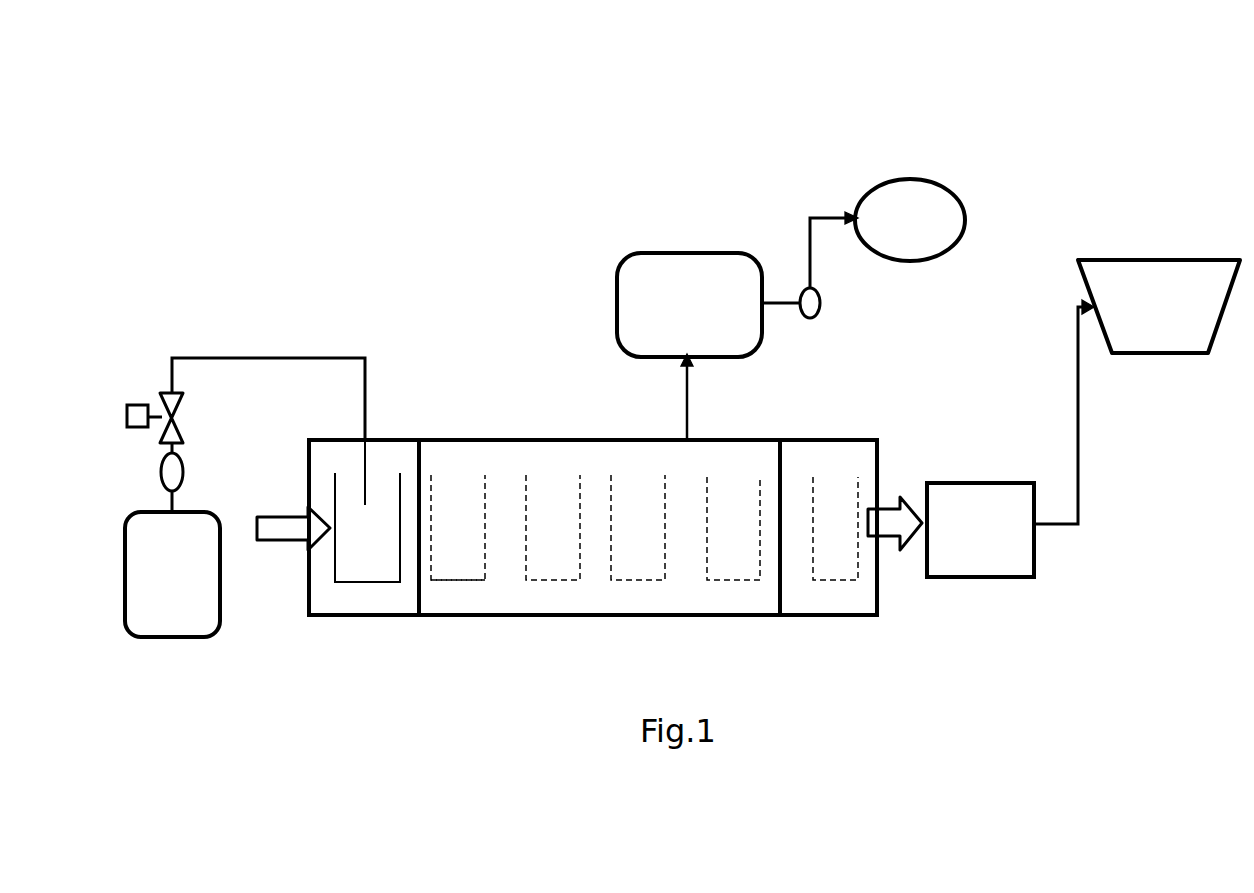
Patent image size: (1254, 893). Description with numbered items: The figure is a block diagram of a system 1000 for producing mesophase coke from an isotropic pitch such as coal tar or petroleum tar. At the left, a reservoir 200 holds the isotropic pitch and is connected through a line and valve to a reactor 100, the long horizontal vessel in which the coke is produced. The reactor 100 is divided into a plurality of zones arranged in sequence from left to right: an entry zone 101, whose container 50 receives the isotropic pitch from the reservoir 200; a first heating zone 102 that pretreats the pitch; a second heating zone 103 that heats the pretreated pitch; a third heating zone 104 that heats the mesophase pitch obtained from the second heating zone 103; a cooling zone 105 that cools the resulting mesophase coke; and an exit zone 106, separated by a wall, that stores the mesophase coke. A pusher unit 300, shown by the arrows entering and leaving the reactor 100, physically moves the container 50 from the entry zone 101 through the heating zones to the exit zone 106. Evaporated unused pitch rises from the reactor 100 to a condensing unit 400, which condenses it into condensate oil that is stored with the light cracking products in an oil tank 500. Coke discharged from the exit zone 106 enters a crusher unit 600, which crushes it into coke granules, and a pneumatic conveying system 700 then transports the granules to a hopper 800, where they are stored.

The system 1000 is at (1030, 82).
The reactor 100 is at (610, 438).
The entry zone 101 is at (384, 475).
The first heating zone 102 is at (470, 457).
The second heating zone 103 is at (565, 465).
The third heating zone 104 is at (643, 455).
The cooling zone 105 is at (728, 455).
The exit zone 106 is at (835, 450).
The container 50 is at (363, 582).
The reservoir 200 is at (155, 512).
The pusher unit 300 is at (300, 515).
The condensing unit 400 is at (687, 250).
The oil tank 500 is at (878, 183).
The crusher unit 600 is at (960, 480).
The pneumatic conveying system 700 is at (1080, 490).
The hopper 800 is at (1133, 262).